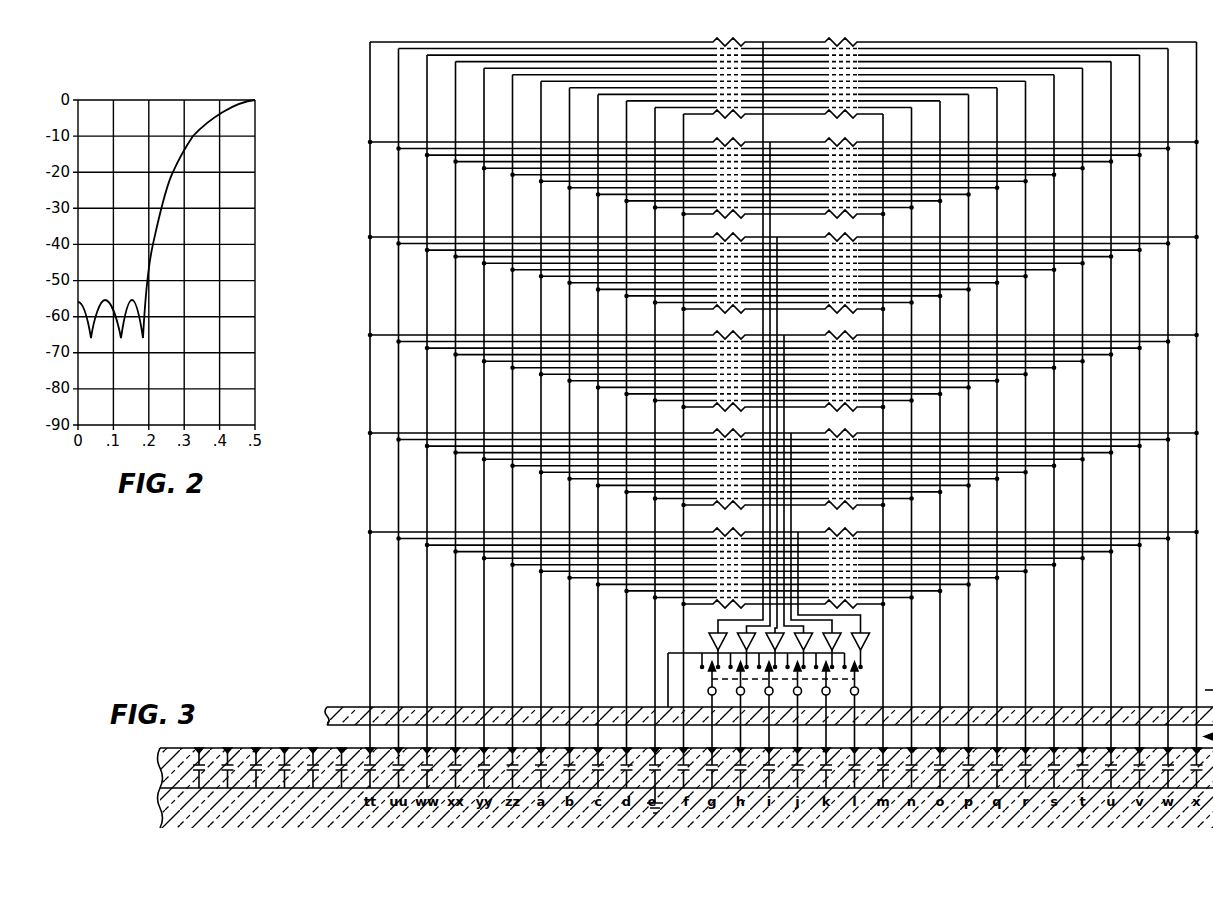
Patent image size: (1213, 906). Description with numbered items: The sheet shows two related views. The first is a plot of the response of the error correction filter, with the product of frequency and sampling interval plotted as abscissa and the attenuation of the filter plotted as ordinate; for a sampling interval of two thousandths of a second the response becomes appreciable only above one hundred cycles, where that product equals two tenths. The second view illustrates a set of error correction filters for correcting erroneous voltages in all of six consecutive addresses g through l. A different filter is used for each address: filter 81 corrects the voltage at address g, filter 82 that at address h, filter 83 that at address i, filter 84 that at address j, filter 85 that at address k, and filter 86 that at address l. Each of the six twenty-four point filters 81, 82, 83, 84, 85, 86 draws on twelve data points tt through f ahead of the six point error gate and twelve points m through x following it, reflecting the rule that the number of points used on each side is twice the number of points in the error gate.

The filter 81 is at (797, 64).
The filter 82 is at (800, 164).
The filter 83 is at (803, 259).
The filter 84 is at (807, 357).
The filter 85 is at (810, 455).
The filter 86 is at (813, 554).